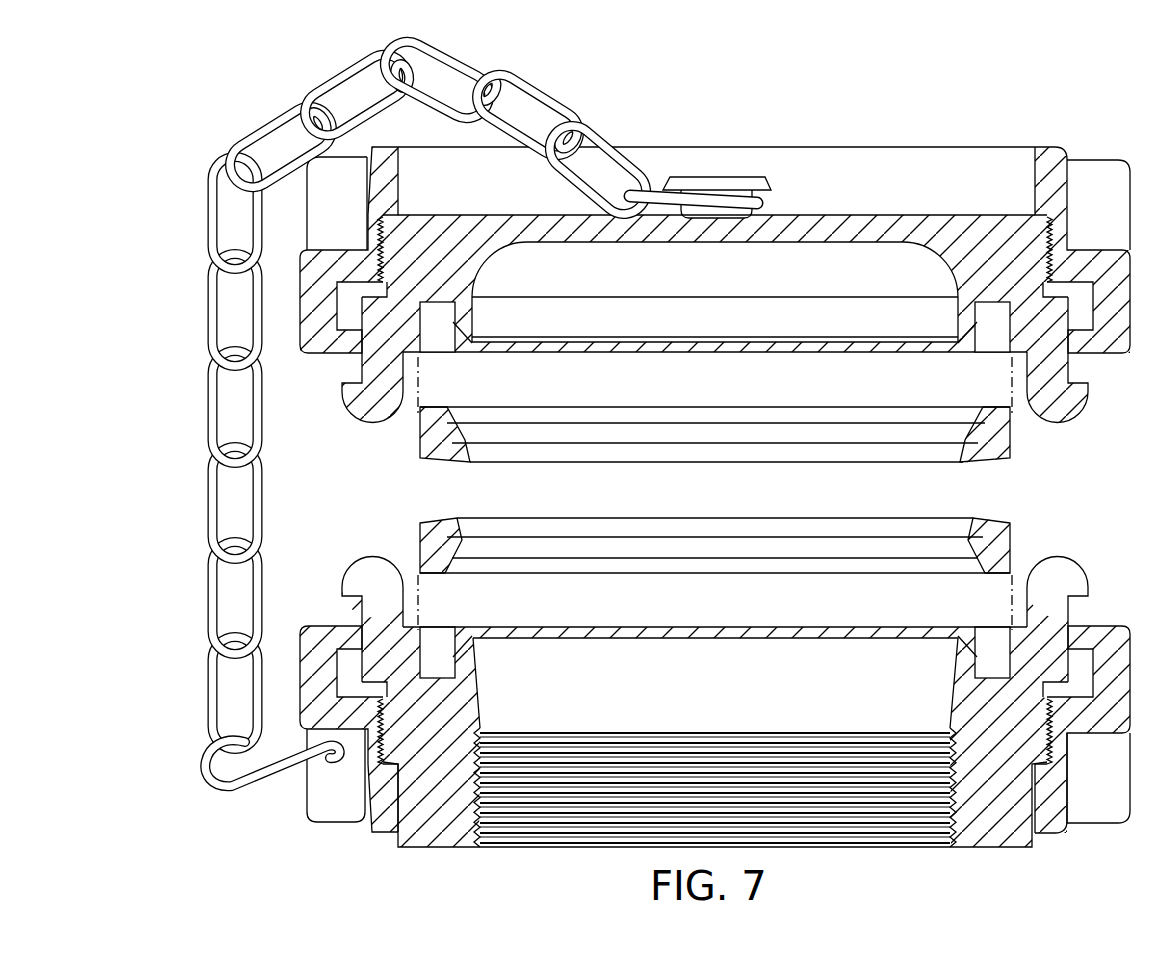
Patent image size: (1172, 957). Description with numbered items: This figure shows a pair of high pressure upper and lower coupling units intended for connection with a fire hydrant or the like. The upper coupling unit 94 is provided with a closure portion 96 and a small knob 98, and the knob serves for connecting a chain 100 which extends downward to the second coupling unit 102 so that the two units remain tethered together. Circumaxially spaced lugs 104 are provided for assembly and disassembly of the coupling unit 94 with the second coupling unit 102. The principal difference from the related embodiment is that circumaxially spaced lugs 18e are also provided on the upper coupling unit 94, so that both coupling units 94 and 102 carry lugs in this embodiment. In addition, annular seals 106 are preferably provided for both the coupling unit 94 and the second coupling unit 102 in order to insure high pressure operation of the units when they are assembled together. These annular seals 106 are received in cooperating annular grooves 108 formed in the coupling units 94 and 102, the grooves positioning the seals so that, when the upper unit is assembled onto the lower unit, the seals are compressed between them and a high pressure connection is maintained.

The coupling unit 94 is at (836, 190).
The closure portion 96 is at (730, 230).
The small knob 98 is at (733, 178).
The chain 100 is at (208, 316).
The second coupling unit 102 is at (527, 860).
The lug 104 is at (356, 211).
The annular seal 106 is at (795, 527).
The annular groove 108 is at (437, 323).
The lug 18e is at (365, 412).